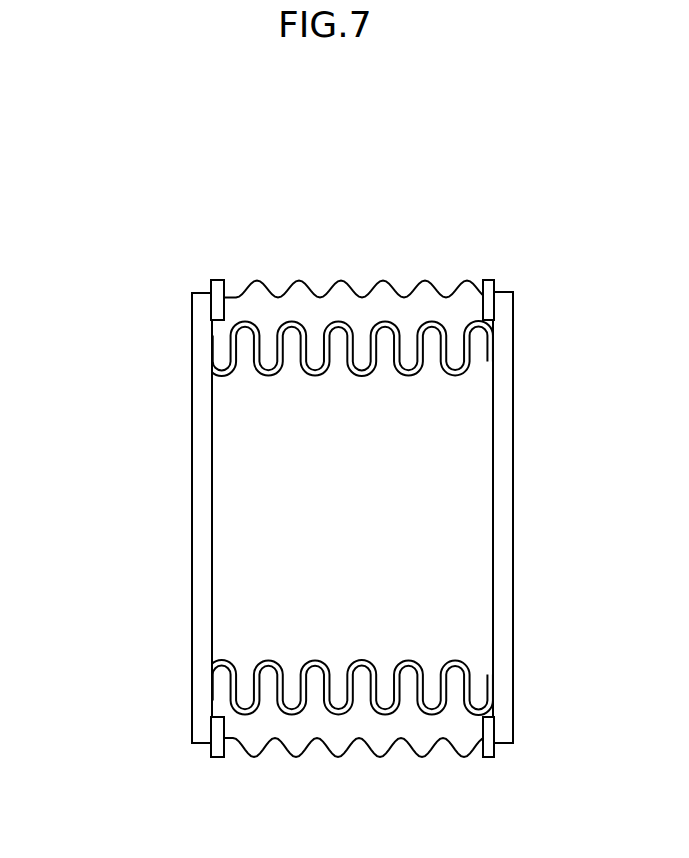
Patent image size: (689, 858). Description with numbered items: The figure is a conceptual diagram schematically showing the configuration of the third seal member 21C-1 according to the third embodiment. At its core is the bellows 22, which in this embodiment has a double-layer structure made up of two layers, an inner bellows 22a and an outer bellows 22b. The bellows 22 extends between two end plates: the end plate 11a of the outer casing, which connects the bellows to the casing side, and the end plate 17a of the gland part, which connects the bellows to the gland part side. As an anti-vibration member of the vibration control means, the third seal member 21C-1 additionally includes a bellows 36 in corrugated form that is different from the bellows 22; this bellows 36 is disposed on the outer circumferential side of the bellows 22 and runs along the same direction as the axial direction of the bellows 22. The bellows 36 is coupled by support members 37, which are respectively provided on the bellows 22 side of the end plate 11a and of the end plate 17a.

The third seal member 21C-1 is at (401, 148).
The bellows 22 is at (100, 385).
The inner bellows 22a is at (240, 348).
The outer bellows 22b is at (264, 366).
The bellows 36 is at (331, 280).
The support members 37 is at (216, 280).
The end plate 11a is at (192, 605).
The end plate 17a is at (514, 619).